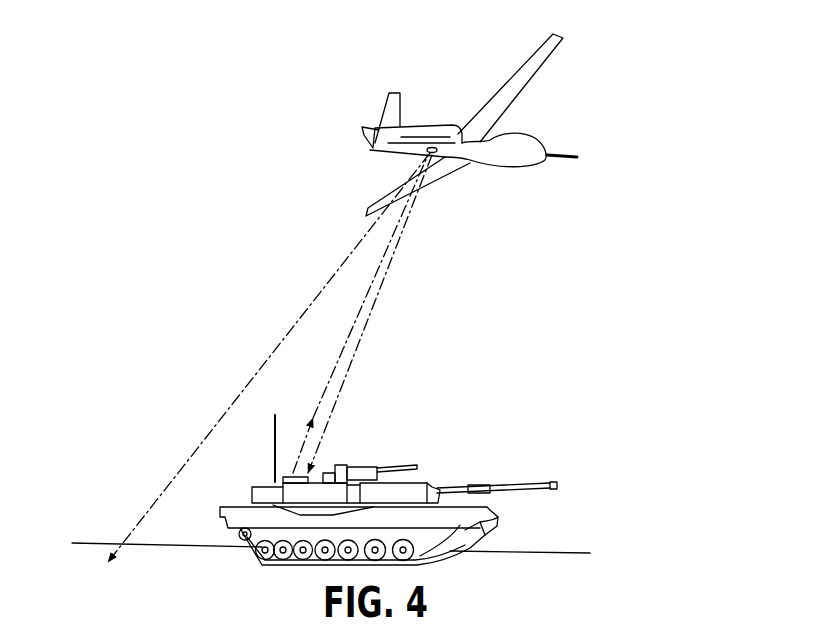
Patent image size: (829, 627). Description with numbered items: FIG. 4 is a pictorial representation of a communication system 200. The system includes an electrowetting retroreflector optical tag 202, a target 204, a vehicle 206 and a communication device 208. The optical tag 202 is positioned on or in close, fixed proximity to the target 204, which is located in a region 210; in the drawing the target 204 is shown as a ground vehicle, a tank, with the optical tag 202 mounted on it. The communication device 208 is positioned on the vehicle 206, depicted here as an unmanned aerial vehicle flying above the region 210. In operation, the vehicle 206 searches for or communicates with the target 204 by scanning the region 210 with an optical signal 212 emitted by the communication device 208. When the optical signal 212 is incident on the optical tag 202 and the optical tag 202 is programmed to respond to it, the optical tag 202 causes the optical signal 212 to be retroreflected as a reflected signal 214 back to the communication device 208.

The communication system 200 is at (200, 183).
The electrowetting retroreflector optical tag 202 is at (287, 477).
The target 204 is at (434, 485).
The vehicle 206 is at (539, 137).
The communication device 208 is at (430, 146).
The region 210 is at (133, 493).
The optical signal 212 is at (233, 402).
The reflected signal 214 is at (328, 392).